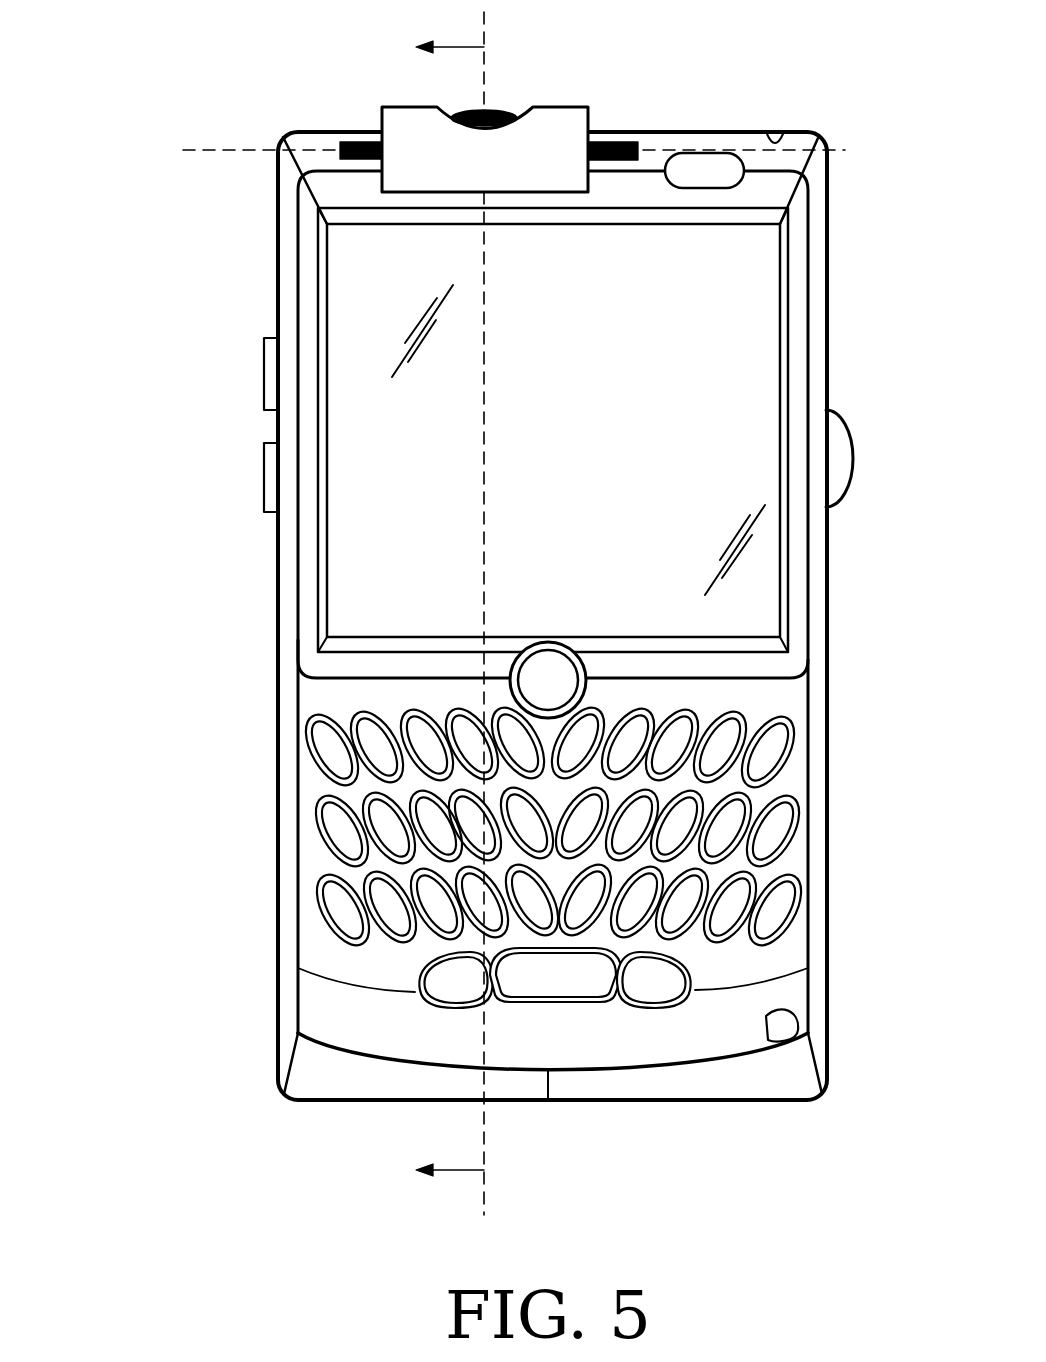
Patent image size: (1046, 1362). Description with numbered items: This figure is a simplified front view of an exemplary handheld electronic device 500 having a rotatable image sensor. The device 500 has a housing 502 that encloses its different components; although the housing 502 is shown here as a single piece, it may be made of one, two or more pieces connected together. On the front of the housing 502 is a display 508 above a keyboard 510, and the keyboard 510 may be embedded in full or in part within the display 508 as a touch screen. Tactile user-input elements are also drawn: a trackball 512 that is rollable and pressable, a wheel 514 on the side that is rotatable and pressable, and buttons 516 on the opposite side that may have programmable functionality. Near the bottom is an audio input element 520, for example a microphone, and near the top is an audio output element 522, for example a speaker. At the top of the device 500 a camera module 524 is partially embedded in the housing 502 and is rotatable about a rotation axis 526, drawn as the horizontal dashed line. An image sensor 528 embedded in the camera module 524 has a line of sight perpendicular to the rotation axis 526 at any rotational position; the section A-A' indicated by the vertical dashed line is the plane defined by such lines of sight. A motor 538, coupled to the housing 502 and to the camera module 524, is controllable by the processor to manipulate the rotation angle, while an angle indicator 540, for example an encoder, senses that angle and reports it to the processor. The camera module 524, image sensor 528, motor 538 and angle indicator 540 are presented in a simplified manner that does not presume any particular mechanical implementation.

The handheld electronic device 500 is at (505, 612).
The housing 502 is at (330, 1078).
The display 508 is at (355, 598).
The keyboard 510 is at (325, 700).
The trackball 512 is at (538, 641).
The wheel 514 is at (851, 450).
The buttons 516 is at (264, 478).
The audio input element 520 is at (766, 1018).
The audio output element 522 is at (730, 153).
The camera module 524 is at (520, 100).
The rotation axis 526 is at (208, 150).
The image sensor 528 is at (497, 108).
The motor 538 is at (602, 140).
The angle indicator 540 is at (334, 134).